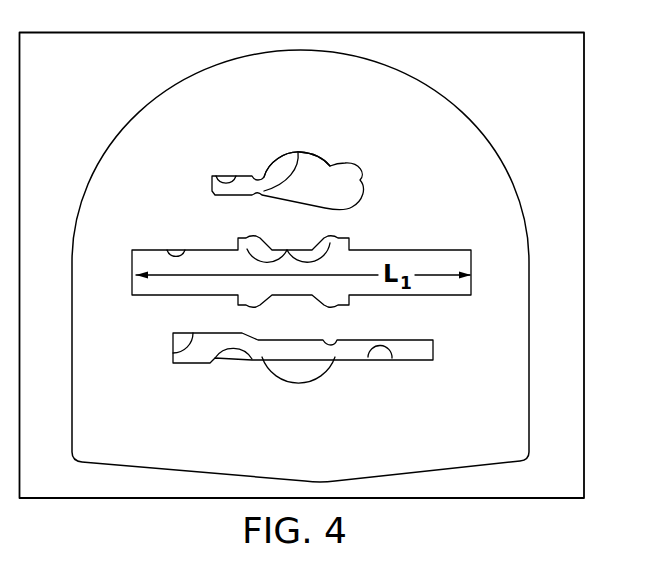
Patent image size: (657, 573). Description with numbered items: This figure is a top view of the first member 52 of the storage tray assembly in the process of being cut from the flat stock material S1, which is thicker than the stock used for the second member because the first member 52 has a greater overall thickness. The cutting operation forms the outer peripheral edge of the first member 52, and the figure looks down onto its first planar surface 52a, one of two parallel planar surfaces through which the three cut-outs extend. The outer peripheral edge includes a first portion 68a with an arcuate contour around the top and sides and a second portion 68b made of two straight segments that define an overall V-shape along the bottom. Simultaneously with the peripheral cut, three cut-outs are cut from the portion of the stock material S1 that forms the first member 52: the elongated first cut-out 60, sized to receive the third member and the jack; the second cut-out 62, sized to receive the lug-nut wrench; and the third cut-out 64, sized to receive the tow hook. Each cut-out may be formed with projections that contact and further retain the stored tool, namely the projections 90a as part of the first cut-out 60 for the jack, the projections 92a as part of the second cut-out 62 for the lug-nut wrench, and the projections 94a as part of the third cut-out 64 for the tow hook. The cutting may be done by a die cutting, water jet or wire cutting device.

The flat stock material S1 is at (560, 32).
The first member 52 is at (486, 126).
The first planar surface 52a is at (470, 207).
The first portion of the outer peripheral edge 68a is at (142, 112).
The second portion of the outer peripheral edge 68b is at (124, 463).
The third cut-out 64 is at (218, 177).
The projections 94a is at (298, 152).
The first cut-out 60 is at (172, 257).
The projections 90a is at (288, 252).
The second cut-out 62 is at (173, 351).
The projections 92a is at (245, 358).